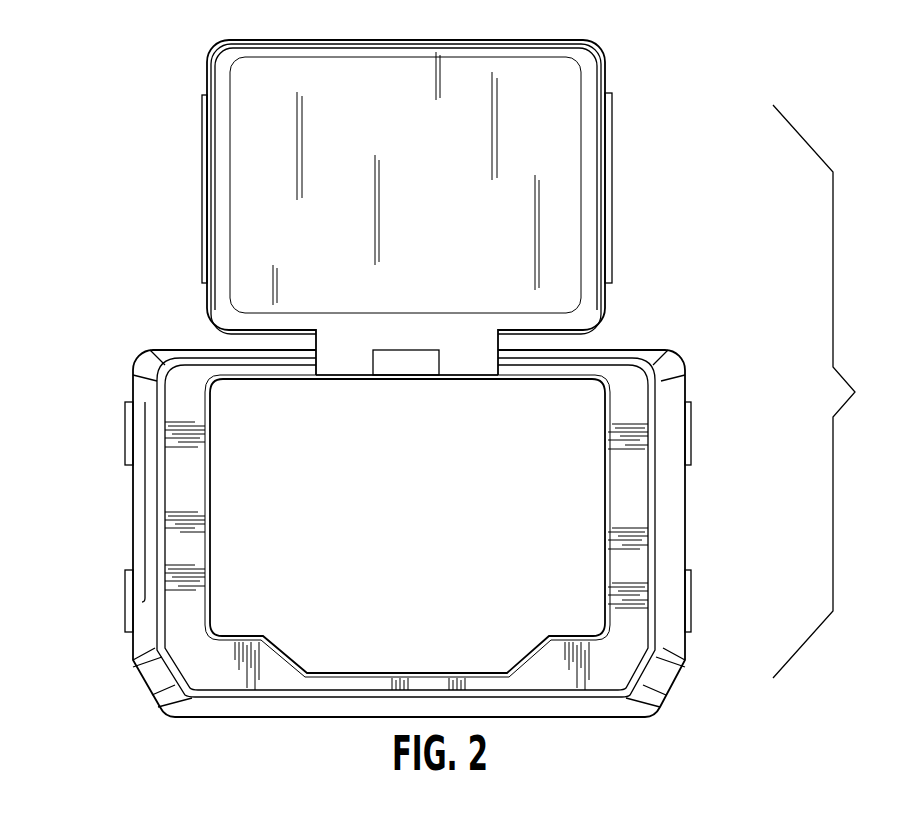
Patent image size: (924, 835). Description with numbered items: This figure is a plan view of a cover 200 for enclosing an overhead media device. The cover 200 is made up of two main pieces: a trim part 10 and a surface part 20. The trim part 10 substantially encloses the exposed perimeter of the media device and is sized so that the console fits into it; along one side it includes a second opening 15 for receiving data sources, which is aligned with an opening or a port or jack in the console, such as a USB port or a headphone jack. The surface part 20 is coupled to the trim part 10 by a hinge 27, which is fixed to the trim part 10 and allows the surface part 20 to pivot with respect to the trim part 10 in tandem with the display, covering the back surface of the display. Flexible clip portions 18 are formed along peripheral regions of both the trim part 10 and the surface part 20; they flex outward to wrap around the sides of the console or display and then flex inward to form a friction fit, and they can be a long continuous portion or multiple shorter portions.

The trim part 10 is at (622, 664).
The second opening 15 is at (145, 510).
The flexible clip portions 18 is at (613, 150).
The surface part 20 is at (460, 113).
The hinge 27 is at (477, 359).
The cover 200 is at (832, 391).